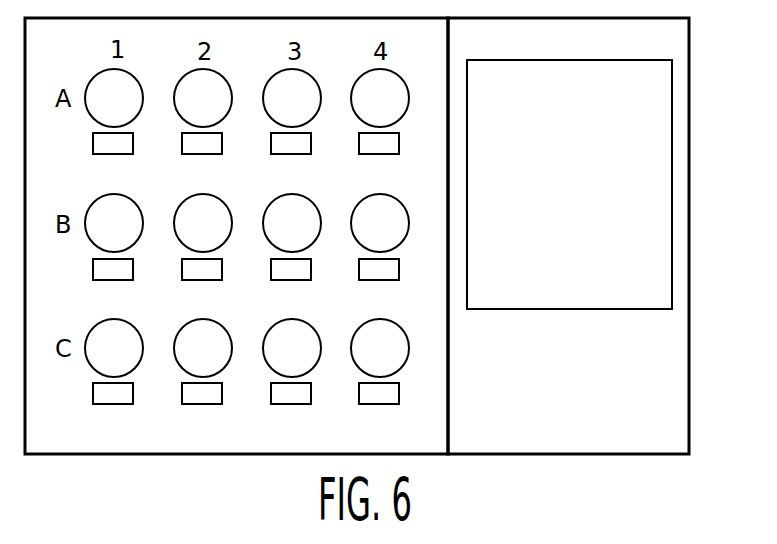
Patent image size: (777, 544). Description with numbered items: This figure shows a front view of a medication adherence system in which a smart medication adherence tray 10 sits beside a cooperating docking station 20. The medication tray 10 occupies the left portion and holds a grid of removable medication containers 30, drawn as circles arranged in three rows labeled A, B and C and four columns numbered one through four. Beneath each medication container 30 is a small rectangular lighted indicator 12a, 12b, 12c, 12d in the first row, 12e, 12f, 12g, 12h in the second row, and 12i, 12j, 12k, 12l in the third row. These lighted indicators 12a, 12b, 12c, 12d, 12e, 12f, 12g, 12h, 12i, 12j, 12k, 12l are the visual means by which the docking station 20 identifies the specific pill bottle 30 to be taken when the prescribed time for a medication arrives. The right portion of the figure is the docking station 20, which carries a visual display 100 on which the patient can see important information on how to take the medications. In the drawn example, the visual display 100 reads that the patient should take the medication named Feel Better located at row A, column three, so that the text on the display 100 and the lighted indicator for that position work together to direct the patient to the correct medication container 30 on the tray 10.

The smart medication adherence tray 10 is at (449, 408).
The docking station 20 is at (690, 78).
The removable medication container 30 is at (133, 72).
The visual display 100 is at (597, 309).
The lighted indicator 12a is at (117, 154).
The lighted indicator 12b is at (215, 154).
The lighted indicator 12c is at (303, 154).
The lighted indicator 12d is at (389, 154).
The lighted indicator 12e is at (117, 280).
The lighted indicator 12f is at (215, 280).
The lighted indicator 12g is at (303, 280).
The lighted indicator 12h is at (389, 280).
The lighted indicator 12i is at (117, 404).
The lighted indicator 12j is at (215, 404).
The lighted indicator 12k is at (295, 404).
The lighted indicator 12l is at (389, 404).